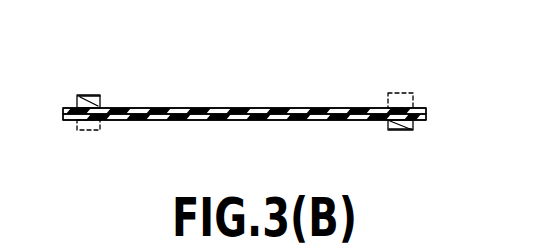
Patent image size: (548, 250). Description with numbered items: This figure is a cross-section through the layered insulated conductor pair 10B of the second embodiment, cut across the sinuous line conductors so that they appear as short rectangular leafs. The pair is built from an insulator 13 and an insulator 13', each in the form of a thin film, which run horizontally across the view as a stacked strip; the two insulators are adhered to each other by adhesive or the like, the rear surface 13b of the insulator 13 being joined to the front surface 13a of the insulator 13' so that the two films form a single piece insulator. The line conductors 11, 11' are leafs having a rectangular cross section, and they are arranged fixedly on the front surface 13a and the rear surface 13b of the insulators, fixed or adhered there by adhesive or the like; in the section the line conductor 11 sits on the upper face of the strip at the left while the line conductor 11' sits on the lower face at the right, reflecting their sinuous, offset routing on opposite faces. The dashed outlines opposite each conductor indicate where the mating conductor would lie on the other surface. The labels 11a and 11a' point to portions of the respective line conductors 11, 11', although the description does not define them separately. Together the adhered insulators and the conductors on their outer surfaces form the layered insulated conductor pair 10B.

The layered insulated conductor pair 10B is at (352, 108).
The line conductor 11 is at (82, 81).
The component lead 11a is at (120, 79).
The line conductor 11' is at (410, 150).
The component lead 11a' is at (447, 144).
The insulator 13 is at (244, 69).
The insulator 13' is at (244, 152).
The front surface 13a is at (210, 108).
The rear surface 13b is at (262, 110).